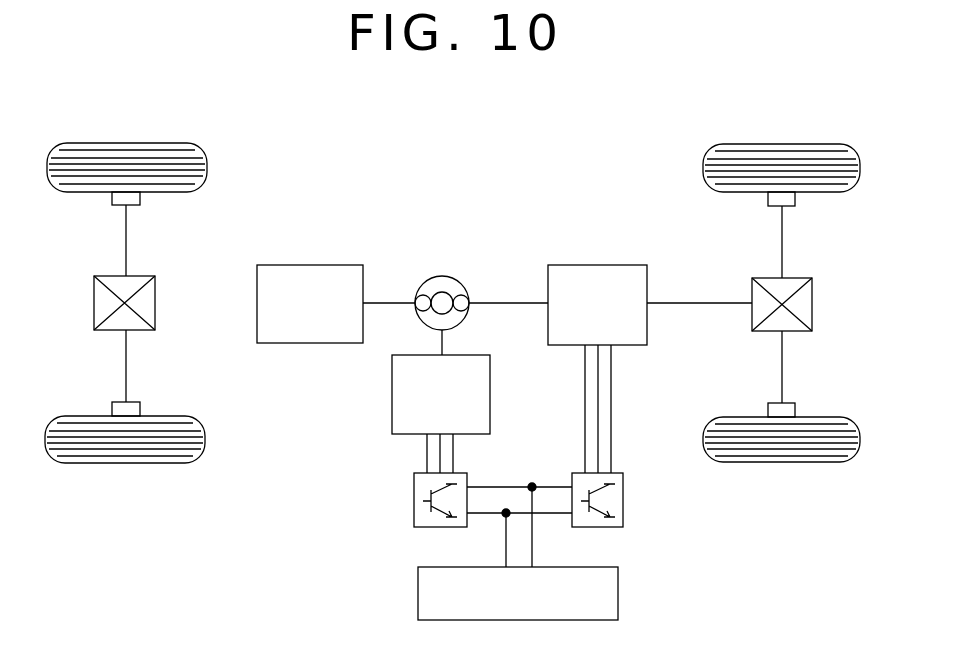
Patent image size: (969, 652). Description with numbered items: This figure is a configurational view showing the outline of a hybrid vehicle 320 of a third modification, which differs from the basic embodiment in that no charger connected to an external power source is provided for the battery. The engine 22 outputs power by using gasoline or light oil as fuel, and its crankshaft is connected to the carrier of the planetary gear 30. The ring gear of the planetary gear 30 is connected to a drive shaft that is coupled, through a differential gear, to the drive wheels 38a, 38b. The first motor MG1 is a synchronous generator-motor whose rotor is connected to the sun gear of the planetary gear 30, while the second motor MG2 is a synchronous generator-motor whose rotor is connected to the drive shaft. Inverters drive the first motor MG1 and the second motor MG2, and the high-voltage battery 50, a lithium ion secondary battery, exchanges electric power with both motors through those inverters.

The hybrid vehicle 320 is at (433, 129).
The engine 22 is at (310, 265).
The planetary gear 30 is at (440, 276).
The first motor MG1 is at (392, 393).
The second motor MG2 is at (598, 265).
The drive wheel 38a is at (781, 143).
The drive wheel 38b is at (782, 462).
The high-voltage battery 50 is at (618, 590).